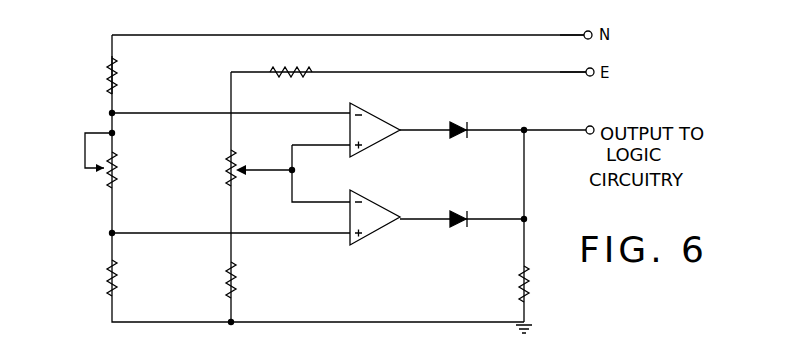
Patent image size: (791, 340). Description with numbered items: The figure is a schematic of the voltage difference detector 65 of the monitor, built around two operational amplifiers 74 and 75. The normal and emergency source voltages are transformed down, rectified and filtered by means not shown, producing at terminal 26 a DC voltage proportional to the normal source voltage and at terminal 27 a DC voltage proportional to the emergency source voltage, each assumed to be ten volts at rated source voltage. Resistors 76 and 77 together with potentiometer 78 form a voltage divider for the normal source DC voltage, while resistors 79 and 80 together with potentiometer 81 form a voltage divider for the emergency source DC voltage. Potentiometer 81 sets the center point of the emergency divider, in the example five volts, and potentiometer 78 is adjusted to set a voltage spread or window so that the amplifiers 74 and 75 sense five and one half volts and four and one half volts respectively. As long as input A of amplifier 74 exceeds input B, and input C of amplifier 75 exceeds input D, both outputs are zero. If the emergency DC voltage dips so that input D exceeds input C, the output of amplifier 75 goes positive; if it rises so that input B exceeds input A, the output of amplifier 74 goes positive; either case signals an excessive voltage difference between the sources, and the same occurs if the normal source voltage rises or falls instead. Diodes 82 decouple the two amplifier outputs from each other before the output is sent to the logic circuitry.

The voltage difference detector 65 is at (74, 66).
The resistor 76 is at (110, 92).
The potentiometer 78 is at (110, 186).
The resistor 77 is at (110, 290).
The resistor 79 is at (294, 70).
The potentiometer 81 is at (231, 176).
The resistor 80 is at (231, 276).
The operational amplifier 74 is at (376, 118).
The operational amplifier 75 is at (374, 204).
The diodes 82 is at (452, 210).
The terminal 26 is at (584, 40).
The terminal 27 is at (590, 78).